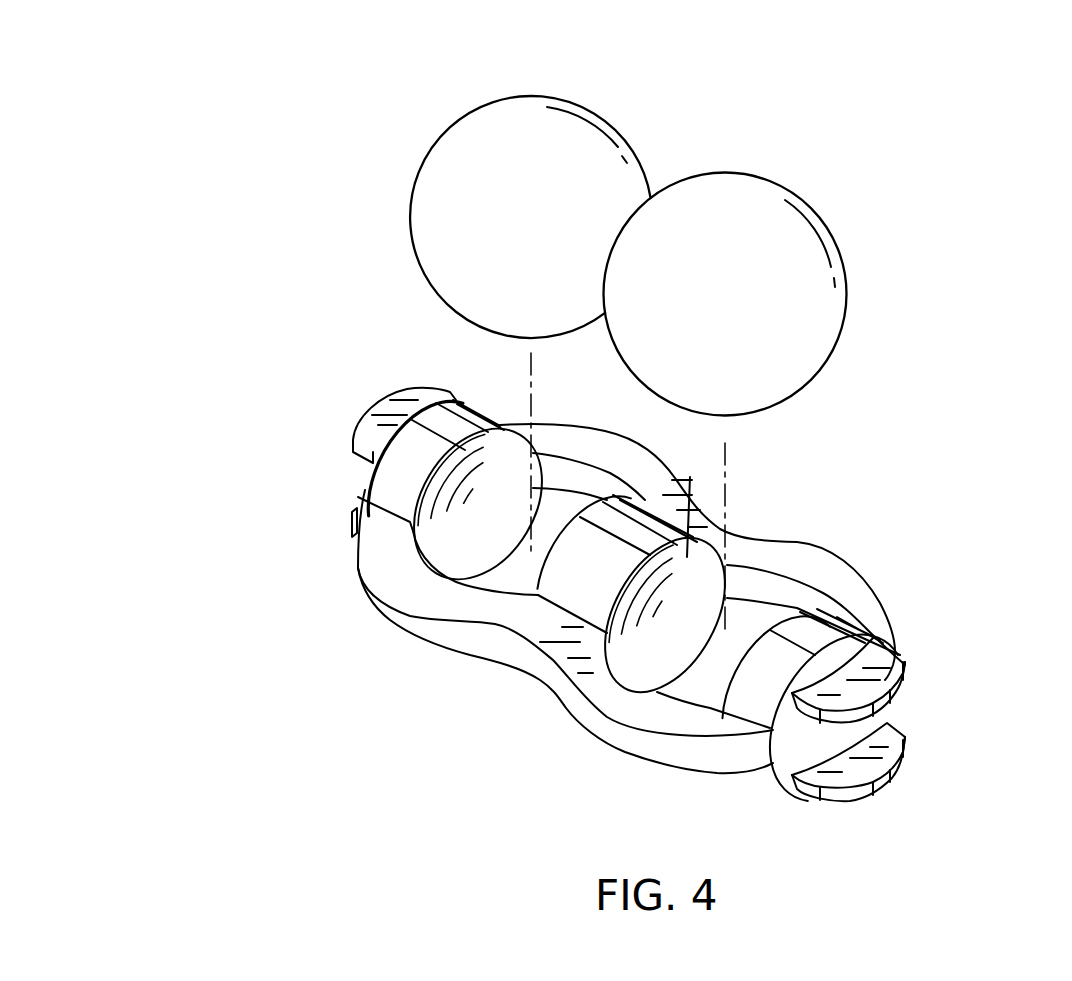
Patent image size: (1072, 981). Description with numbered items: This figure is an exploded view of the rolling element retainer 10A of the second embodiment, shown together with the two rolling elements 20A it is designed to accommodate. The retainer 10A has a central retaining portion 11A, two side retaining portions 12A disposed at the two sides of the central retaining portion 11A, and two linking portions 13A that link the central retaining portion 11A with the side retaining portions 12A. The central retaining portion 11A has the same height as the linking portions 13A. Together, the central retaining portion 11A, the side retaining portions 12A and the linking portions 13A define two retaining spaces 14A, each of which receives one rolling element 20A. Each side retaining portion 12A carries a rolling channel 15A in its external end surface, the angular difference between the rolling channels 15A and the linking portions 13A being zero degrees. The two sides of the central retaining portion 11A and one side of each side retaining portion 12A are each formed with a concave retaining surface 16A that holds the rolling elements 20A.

The retainer 10A is at (803, 535).
The central retaining portion 11A is at (583, 593).
The side retaining portion 12A is at (403, 477).
The linking portion 13A is at (747, 543).
The retaining space 14A is at (517, 572).
The rolling channel 15A is at (367, 489).
The concave retaining surface 16A is at (678, 468).
The rolling element 20A is at (533, 97).